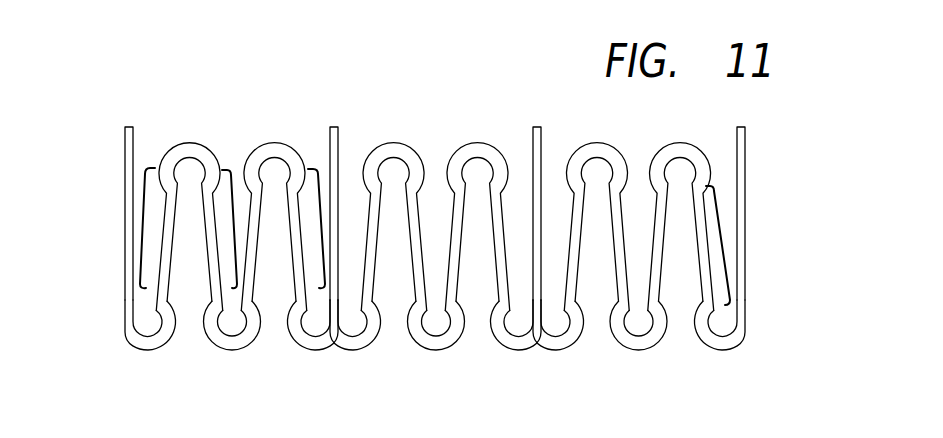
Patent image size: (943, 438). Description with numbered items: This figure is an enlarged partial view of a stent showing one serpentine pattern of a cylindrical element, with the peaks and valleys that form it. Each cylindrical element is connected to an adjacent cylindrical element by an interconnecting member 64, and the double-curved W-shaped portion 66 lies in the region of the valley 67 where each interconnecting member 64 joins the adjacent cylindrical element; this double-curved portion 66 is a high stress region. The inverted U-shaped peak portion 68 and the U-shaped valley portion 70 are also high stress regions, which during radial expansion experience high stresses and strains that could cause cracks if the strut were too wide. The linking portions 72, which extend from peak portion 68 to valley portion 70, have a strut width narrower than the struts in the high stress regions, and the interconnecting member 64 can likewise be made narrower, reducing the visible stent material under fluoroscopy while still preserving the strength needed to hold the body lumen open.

The interconnecting member 64 is at (333, 128).
The double-curved portion 66 is at (543, 349).
The valley 67 is at (375, 367).
The peak portion 68 is at (184, 144).
The valley portion 70 is at (433, 352).
The linking portion 72 is at (143, 231).